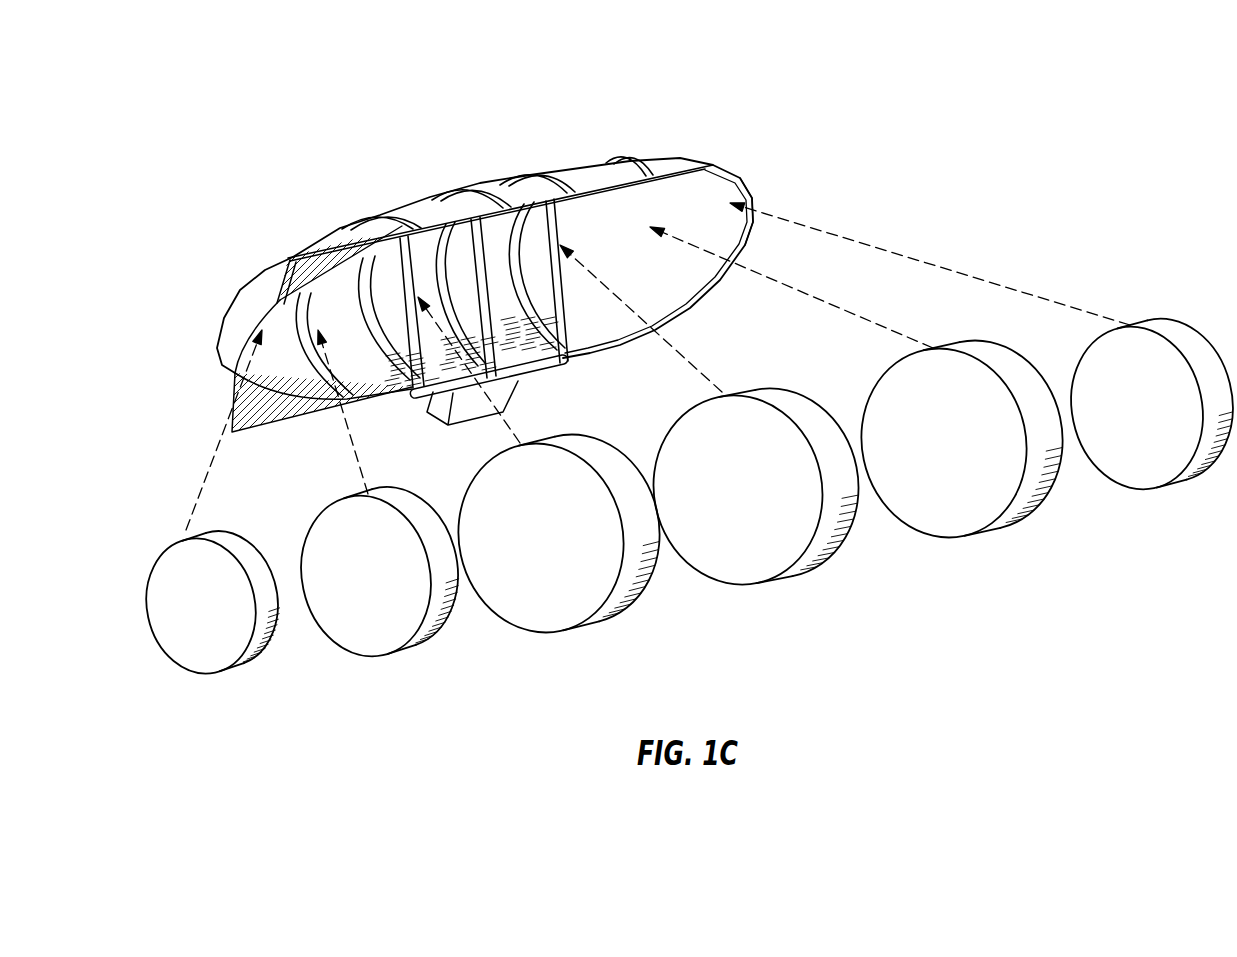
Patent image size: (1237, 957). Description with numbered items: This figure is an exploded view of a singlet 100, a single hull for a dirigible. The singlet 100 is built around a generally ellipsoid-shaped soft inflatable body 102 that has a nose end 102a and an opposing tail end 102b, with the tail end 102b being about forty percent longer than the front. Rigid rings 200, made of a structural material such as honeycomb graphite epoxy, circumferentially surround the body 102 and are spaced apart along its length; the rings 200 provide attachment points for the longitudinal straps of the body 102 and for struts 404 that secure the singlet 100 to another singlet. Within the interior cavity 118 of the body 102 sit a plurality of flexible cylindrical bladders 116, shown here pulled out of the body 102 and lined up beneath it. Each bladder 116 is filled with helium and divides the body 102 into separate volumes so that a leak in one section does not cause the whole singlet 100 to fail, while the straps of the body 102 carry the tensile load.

The singlet 100 is at (297, 62).
The body 102 is at (352, 237).
The nose end 102a is at (752, 186).
The tail end 102b is at (220, 352).
The bladders 116 is at (560, 551).
The interior cavity 118 is at (686, 160).
The rings 200 is at (538, 172).
The struts 404 is at (400, 283).